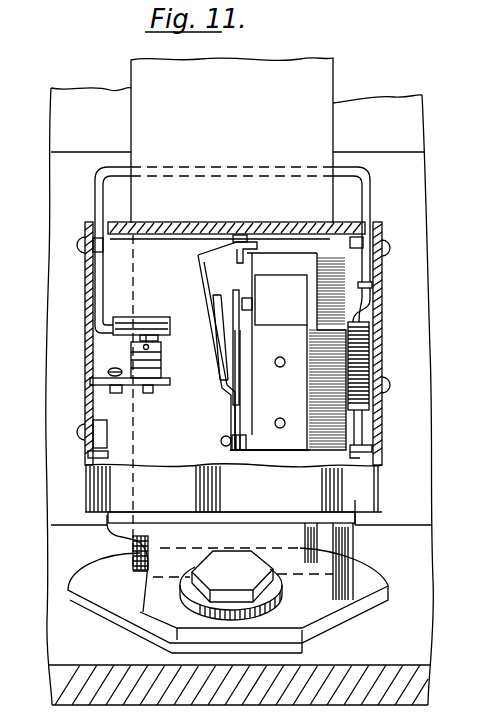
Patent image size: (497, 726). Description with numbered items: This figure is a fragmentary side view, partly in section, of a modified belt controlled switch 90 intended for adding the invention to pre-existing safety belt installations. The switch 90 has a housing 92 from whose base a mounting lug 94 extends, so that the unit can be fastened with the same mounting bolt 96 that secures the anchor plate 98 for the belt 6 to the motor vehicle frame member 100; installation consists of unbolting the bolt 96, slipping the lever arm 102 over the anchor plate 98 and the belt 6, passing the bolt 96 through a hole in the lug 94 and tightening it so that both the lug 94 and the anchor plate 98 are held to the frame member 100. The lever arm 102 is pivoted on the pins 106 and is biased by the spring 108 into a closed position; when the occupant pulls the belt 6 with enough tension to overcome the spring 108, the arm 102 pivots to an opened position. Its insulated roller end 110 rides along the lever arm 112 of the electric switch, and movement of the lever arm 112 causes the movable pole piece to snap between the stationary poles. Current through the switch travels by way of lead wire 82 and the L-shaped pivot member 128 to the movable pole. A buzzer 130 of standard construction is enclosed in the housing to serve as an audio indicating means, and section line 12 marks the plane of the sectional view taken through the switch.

The belt 6 is at (322, 143).
The section line 12- 12 is at (148, 137).
The lead wire 82 is at (160, 397).
The belt controlled switch 90 is at (383, 318).
The housing 92 is at (373, 493).
The mounting lug 94 is at (357, 547).
The mounting bolt 96 is at (267, 563).
The anchor plate 98 is at (375, 582).
The motor vehicle frame member 100 is at (418, 637).
The lever arm 102 is at (368, 200).
The pins 106 is at (384, 247).
The spring 108 is at (368, 353).
The insulated roller end 110 is at (142, 322).
The lever arm of electric switch 112 is at (145, 337).
The L-shaped pivot member 128 is at (161, 354).
The buzzer 130 is at (229, 398).